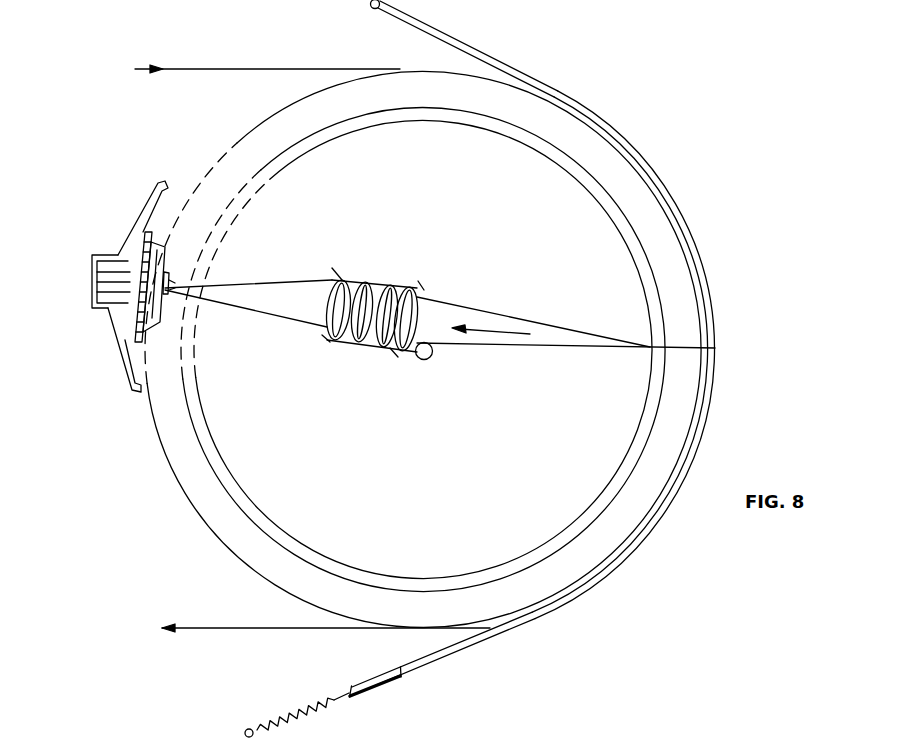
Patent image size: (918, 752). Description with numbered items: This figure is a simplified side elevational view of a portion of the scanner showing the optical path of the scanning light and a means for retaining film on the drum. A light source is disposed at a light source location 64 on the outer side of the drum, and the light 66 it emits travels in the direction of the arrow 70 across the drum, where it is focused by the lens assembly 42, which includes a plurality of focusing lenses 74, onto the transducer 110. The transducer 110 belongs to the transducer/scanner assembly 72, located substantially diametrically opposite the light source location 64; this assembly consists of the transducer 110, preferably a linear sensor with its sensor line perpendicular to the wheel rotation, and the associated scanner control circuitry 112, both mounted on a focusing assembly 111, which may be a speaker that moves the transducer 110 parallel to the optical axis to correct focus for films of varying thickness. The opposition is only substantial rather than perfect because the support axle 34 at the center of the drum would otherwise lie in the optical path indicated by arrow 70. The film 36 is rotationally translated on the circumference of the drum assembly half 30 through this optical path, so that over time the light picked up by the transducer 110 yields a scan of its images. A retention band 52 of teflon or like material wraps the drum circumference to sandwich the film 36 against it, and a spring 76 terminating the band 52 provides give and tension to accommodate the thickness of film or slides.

The drum assembly half 30 is at (543, 162).
The support axle 34 is at (431, 358).
The film 36 is at (214, 68).
The lens assembly 42 is at (402, 268).
The retention band 52 is at (478, 44).
The light source location 64 is at (727, 333).
The light 66 is at (537, 325).
The arrow 70 is at (480, 323).
The transducer/scanner assembly 72 is at (94, 337).
The focusing lens 74 is at (318, 333).
The spring 76 is at (296, 717).
The transducer 110 is at (165, 262).
The focusing assembly 111 is at (89, 297).
The scanner control circuitry 112 is at (133, 253).